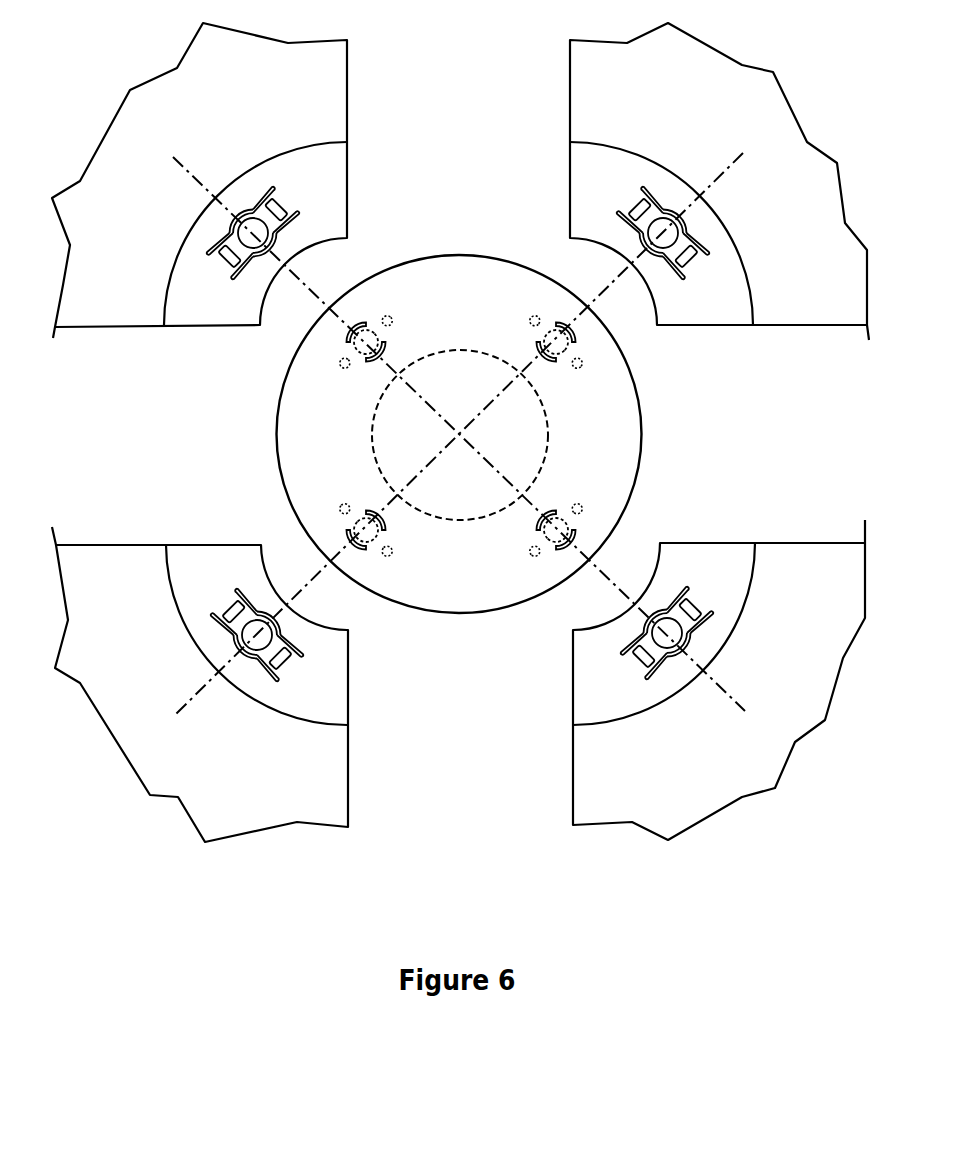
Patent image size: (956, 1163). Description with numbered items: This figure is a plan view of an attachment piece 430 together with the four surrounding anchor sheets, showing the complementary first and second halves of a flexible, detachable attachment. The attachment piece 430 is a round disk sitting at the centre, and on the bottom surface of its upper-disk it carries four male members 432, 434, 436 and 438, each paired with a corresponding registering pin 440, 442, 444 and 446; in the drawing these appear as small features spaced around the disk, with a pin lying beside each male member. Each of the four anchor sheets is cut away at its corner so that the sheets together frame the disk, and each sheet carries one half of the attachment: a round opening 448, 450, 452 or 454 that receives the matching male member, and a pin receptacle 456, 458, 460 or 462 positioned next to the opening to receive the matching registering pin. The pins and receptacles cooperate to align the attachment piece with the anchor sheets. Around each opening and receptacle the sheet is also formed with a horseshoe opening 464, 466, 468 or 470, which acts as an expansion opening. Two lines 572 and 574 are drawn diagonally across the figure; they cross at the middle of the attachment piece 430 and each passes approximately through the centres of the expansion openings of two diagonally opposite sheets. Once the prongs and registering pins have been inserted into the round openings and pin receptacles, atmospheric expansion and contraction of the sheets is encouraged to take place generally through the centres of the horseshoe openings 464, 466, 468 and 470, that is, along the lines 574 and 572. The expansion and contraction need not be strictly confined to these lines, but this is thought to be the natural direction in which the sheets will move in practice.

The attachment piece 430 is at (465, 255).
The male member 432 is at (534, 329).
The male member 434 is at (533, 545).
The male member 436 is at (390, 545).
The male member 438 is at (389, 329).
The registering pin 440 is at (581, 370).
The registering pin 442 is at (581, 503).
The registering pin 444 is at (341, 503).
The registering pin 446 is at (341, 370).
The opening 448 is at (693, 230).
The opening 450 is at (690, 637).
The opening 452 is at (232, 637).
The opening 454 is at (232, 232).
The pin receptacle 456 is at (645, 212).
The pin receptacle 458 is at (648, 660).
The pin receptacle 460 is at (285, 660).
The pin receptacle 462 is at (272, 210).
The horseshoe opening 464 is at (708, 258).
The horseshoe opening 466 is at (712, 618).
The horseshoe opening 468 is at (215, 618).
The horseshoe opening 470 is at (210, 268).
The line 572 is at (191, 177).
The line 574 is at (737, 165).